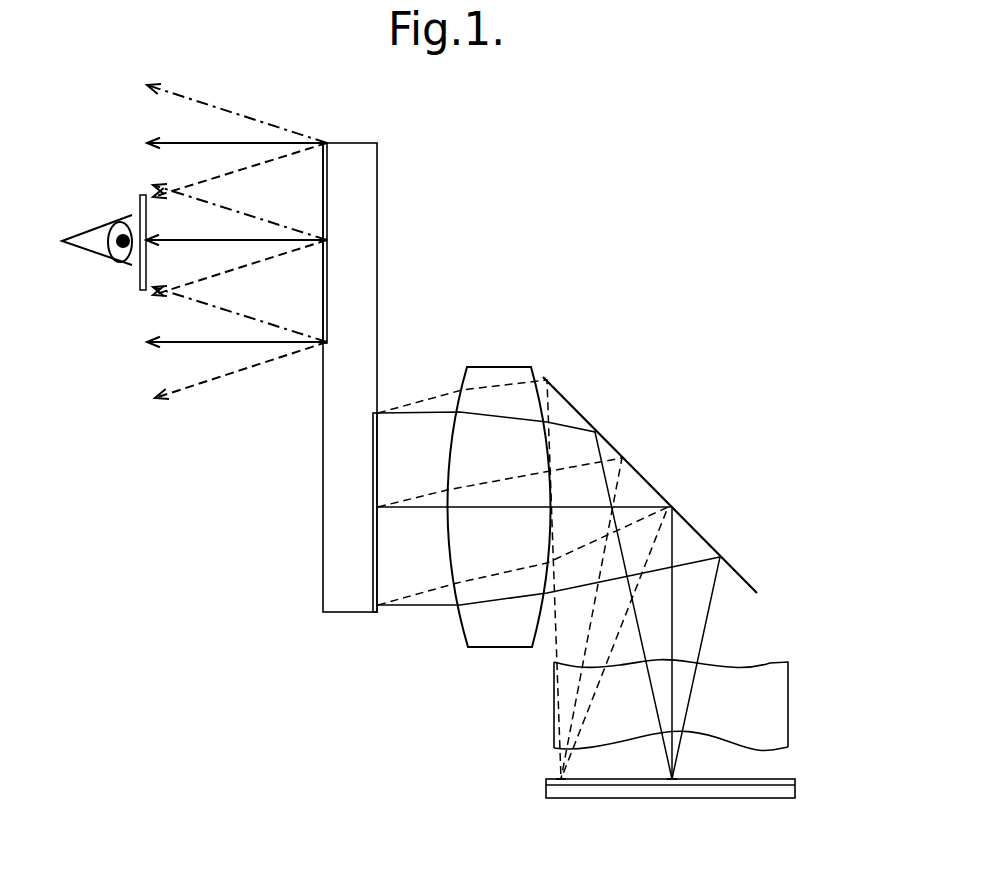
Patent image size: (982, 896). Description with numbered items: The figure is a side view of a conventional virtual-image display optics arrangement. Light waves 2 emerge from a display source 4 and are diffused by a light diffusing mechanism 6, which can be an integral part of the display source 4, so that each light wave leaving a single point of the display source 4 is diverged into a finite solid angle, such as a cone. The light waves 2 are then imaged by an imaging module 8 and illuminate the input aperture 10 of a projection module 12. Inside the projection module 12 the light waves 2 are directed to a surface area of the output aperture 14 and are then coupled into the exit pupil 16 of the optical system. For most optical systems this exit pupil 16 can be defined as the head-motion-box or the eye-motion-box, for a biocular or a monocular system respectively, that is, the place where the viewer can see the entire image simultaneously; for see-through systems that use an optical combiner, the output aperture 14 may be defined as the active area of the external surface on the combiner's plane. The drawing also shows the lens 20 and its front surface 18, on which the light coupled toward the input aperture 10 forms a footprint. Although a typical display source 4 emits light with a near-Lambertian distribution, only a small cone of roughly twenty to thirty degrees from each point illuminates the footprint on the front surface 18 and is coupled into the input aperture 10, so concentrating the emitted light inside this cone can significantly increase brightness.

The light waves 2 is at (567, 758).
The display source 4 is at (560, 797).
The light diffusing mechanism 6 is at (552, 778).
The imaging module 8 is at (506, 684).
The input aperture 10 is at (377, 558).
The projection module 12 is at (365, 318).
The output aperture 14 is at (325, 200).
The exit pupil 16 is at (140, 283).
The front surface 18 is at (775, 750).
The lens 20 is at (778, 697).